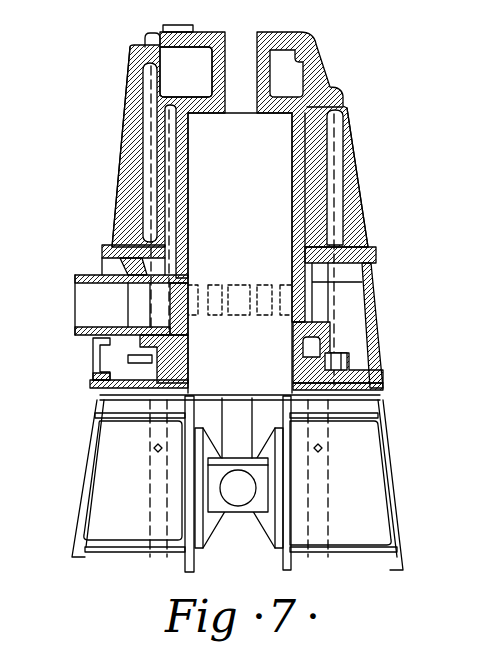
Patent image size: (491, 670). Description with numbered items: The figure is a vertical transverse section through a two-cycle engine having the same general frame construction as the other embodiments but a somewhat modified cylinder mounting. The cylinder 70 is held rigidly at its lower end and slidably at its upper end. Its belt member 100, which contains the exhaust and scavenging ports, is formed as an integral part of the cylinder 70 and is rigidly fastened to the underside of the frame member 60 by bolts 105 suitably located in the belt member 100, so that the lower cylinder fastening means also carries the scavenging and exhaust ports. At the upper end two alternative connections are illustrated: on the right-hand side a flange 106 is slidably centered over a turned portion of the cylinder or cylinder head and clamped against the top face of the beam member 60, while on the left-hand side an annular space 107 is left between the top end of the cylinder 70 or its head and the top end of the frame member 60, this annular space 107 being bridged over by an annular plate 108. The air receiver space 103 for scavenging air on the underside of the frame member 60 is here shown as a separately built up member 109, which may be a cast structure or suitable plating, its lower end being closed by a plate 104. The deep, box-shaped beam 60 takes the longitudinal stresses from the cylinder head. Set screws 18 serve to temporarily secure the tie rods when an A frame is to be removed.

The set screws 18 is at (324, 450).
The top beam or frame member 60 is at (125, 168).
The cylinder 70 is at (190, 128).
The belt member 100 is at (123, 348).
The air receiver space 103 is at (350, 361).
The plate 104 is at (378, 396).
The bolts 105 is at (95, 385).
The flange 106 is at (318, 72).
The annular space 107 is at (170, 48).
The annular plate 108 is at (185, 25).
The separately built up member 109 is at (370, 296).